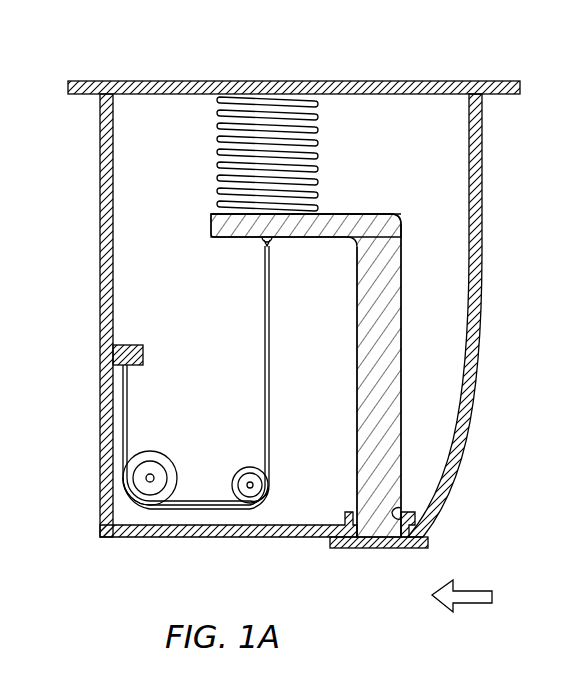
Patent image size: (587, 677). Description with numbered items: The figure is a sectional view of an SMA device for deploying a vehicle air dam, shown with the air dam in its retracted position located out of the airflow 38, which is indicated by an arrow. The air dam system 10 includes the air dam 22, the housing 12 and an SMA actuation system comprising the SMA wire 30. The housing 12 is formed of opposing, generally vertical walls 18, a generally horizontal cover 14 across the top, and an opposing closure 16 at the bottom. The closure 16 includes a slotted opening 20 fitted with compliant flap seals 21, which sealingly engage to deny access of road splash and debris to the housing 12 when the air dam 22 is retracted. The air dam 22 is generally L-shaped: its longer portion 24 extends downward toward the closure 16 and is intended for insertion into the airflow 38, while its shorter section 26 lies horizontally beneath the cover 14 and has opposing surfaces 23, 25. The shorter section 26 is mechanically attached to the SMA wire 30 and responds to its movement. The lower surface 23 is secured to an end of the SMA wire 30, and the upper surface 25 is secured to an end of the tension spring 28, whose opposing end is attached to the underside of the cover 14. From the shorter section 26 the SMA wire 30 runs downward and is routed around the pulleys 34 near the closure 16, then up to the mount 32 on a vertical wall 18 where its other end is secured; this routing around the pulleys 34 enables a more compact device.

The air dam system 10 is at (386, 78).
The housing 12 is at (99, 267).
The cover 14 is at (143, 80).
The closure 16 is at (158, 538).
The vertical walls 18 is at (100, 178).
The slotted opening 20 is at (398, 512).
The compliant flap seals 21 is at (400, 548).
The air dam 22 is at (402, 253).
The surface 23 is at (262, 243).
The longer portion 24 is at (401, 337).
The surface 25 is at (218, 213).
The shorter section 26 is at (345, 213).
The tension spring 28 is at (220, 152).
The SMA wire 30 is at (123, 408).
The mount 32 is at (118, 352).
The pulleys 34 is at (140, 480).
The airflow 38 is at (484, 629).